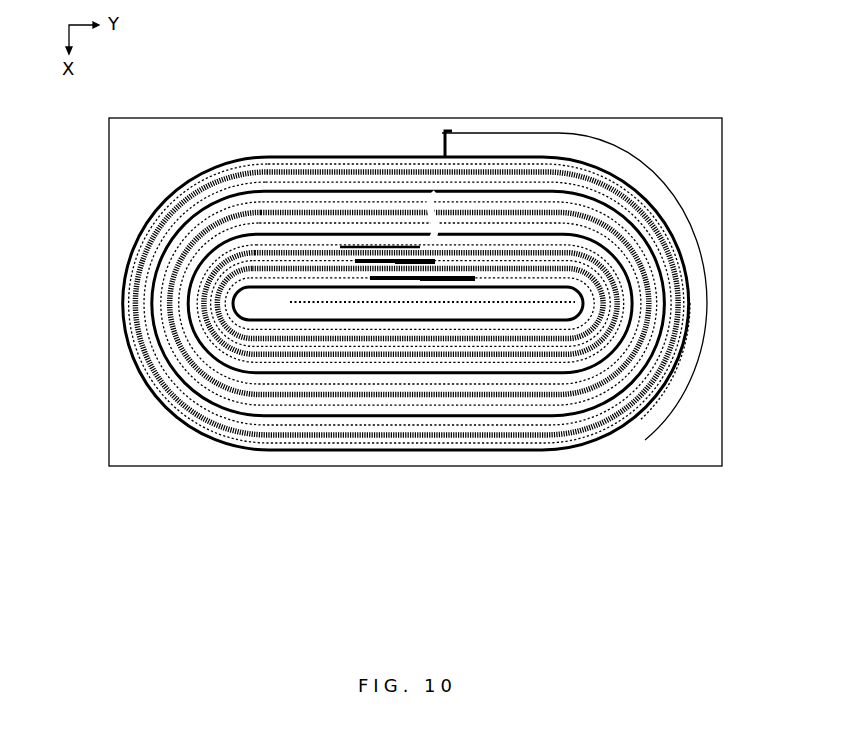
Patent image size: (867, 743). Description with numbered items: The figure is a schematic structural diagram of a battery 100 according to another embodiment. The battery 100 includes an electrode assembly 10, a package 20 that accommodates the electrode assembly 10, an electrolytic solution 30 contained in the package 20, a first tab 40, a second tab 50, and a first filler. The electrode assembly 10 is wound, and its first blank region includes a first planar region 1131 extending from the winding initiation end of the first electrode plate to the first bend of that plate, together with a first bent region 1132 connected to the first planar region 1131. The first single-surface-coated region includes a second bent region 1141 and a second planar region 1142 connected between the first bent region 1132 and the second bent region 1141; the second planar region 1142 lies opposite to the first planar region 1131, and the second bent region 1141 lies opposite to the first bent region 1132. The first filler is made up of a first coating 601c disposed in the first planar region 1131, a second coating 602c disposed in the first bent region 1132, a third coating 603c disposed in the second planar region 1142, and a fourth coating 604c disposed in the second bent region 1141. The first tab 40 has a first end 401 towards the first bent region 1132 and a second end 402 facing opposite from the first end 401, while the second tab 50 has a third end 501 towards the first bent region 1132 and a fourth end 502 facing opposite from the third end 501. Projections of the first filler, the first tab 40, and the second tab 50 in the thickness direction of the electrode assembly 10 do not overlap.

The battery 100 is at (261, 65).
The electrode assembly 10 is at (115, 370).
The package 20 is at (109, 321).
The electrolytic solution 30 is at (127, 178).
The first tab 40 is at (450, 154).
The first end 401 is at (457, 166).
The second end 402 is at (422, 59).
The second tab 50 is at (377, 153).
The third end 501 is at (322, 262).
The fourth end 502 is at (368, 248).
The first coating 601c is at (409, 264).
The second coating 602c is at (130, 239).
The third coating 603c is at (426, 282).
The fourth coating 604c is at (653, 190).
The first planar region 1131 is at (342, 284).
The first bent region 1132 is at (152, 379).
The second bent region 1141 is at (622, 340).
The second planar region 1142 is at (537, 332).